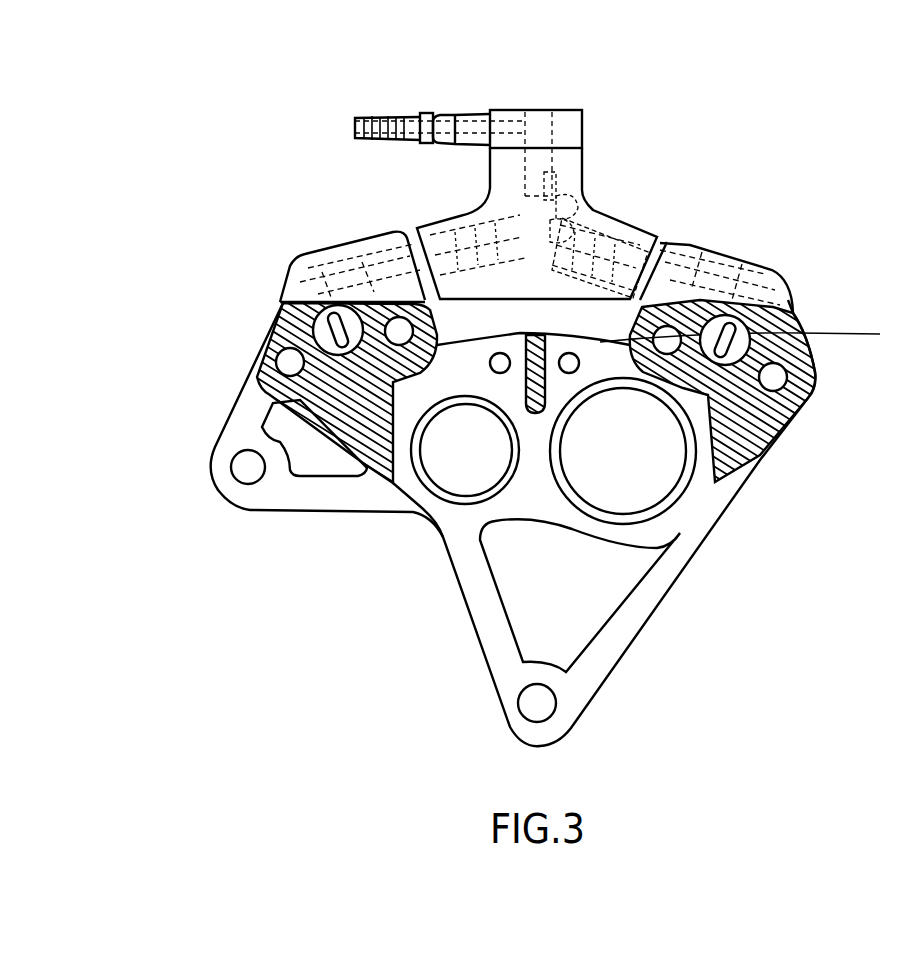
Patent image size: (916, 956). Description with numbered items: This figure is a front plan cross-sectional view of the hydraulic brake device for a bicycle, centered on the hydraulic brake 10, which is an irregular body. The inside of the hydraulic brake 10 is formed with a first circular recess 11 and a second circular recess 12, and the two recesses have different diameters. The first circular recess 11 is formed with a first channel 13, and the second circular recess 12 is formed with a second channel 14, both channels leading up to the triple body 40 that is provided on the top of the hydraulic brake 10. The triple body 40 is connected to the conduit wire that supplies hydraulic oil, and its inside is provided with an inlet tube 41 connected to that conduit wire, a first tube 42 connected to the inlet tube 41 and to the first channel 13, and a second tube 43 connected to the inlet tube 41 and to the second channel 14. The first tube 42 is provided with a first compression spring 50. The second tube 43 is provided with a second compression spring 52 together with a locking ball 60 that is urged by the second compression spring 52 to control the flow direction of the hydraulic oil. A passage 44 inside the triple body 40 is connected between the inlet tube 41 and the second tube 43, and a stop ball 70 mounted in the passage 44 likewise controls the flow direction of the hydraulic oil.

The hydraulic brake 10 is at (235, 424).
The first circular recess 11 is at (453, 468).
The second circular recess 12 is at (650, 480).
The first channel 13 is at (338, 330).
The second channel 14 is at (187, 305).
The triple body 40 is at (555, 215).
The inlet tube 41 is at (537, 122).
The first tube 42 is at (387, 253).
The second tube 43 is at (690, 260).
The passage 44 is at (557, 180).
The first compression spring 50 is at (473, 240).
The second compression spring 52 is at (610, 237).
The locking ball 60 is at (565, 230).
The stop ball 70 is at (567, 203).